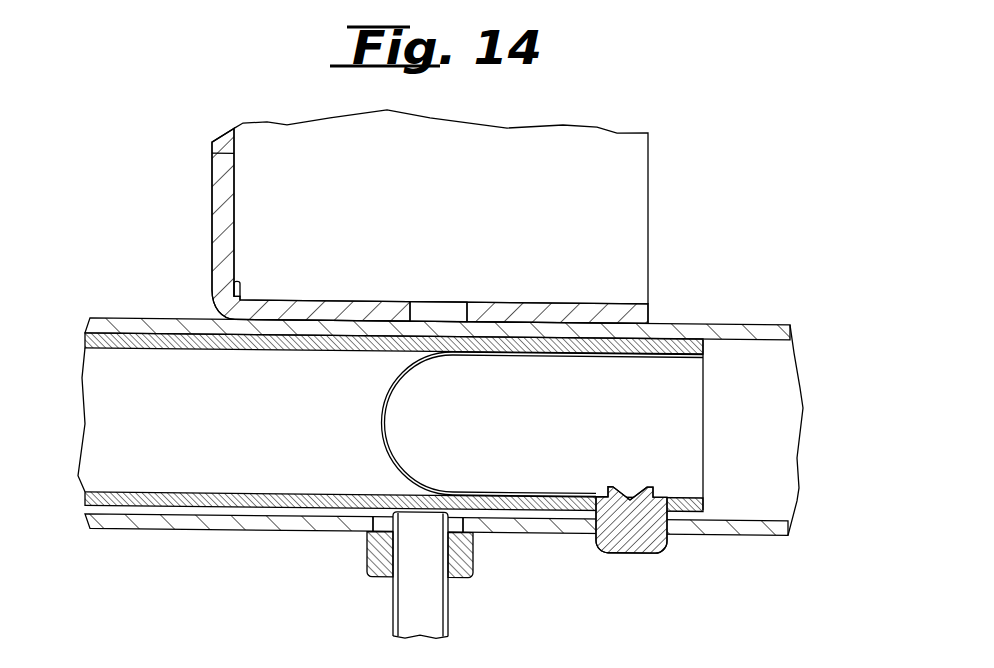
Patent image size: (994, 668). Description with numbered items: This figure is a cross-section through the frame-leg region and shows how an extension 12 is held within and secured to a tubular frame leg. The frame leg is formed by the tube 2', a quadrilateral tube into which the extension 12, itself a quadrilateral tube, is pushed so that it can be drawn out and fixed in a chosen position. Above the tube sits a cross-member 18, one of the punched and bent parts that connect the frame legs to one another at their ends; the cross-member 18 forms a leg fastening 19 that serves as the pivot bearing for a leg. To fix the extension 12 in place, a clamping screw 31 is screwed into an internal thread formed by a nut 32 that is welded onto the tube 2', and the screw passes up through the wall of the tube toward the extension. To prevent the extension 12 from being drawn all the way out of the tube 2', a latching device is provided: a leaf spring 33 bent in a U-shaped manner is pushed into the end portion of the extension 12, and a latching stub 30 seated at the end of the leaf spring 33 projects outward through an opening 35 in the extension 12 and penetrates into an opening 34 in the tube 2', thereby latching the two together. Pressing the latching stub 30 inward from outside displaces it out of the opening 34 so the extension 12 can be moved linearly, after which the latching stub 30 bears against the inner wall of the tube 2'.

The extension 12 is at (131, 338).
The tube 2' is at (425, 366).
The cross-member 18 is at (213, 218).
The leg fastening 19 is at (278, 152).
The latching stub 30 is at (638, 543).
The clamping screw 31 is at (408, 604).
The nut 32 is at (367, 555).
The leaf spring 33 is at (383, 428).
The opening 34 is at (590, 527).
The opening 35 is at (592, 495).